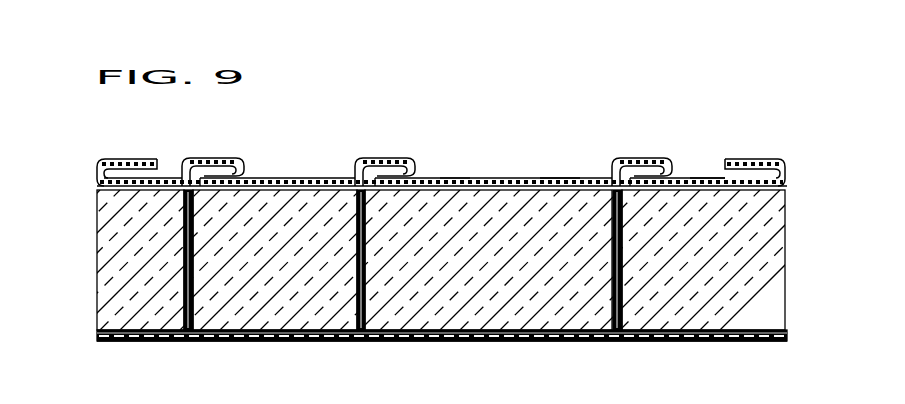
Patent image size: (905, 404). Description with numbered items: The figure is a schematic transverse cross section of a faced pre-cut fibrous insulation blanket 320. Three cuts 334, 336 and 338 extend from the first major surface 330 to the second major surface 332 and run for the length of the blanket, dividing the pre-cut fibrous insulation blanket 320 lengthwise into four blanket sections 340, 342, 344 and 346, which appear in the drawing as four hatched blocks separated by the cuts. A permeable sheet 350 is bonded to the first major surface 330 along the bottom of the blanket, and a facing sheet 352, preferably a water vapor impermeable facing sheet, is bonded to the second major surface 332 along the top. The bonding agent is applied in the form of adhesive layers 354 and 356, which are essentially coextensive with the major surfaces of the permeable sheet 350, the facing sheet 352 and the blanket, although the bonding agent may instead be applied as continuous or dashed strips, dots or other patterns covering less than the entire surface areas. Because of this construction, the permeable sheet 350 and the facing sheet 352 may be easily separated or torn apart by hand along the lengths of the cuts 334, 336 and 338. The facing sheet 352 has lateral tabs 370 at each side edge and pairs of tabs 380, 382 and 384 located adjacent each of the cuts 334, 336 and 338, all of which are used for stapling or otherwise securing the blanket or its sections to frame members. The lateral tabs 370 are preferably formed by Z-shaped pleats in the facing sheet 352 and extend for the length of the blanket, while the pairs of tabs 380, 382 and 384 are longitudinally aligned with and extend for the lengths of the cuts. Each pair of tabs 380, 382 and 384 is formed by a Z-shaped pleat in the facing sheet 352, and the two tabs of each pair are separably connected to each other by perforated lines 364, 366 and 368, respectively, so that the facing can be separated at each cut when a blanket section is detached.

The pre-cut fibrous insulation blanket 320 is at (676, 114).
The first major surface 330 is at (230, 330).
The second major surface 332 is at (276, 178).
The cut 334 is at (186, 322).
The cut 336 is at (345, 316).
The cut 338 is at (633, 298).
The blanket section 340 is at (165, 256).
The blanket section 342 is at (298, 256).
The blanket section 344 is at (512, 259).
The blanket section 346 is at (733, 259).
The permeable sheet 350 is at (485, 345).
The facing sheet 352 is at (560, 168).
The adhesive layer 354 is at (507, 330).
The adhesive layer 356 is at (458, 184).
The perforated line 364 is at (247, 164).
The perforated line 366 is at (420, 166).
The perforated line 368 is at (660, 165).
The lateral tab 370 is at (137, 158).
The pair of tabs 380 is at (226, 152).
The pair of tabs 382 is at (397, 152).
The pair of tabs 384 is at (643, 152).